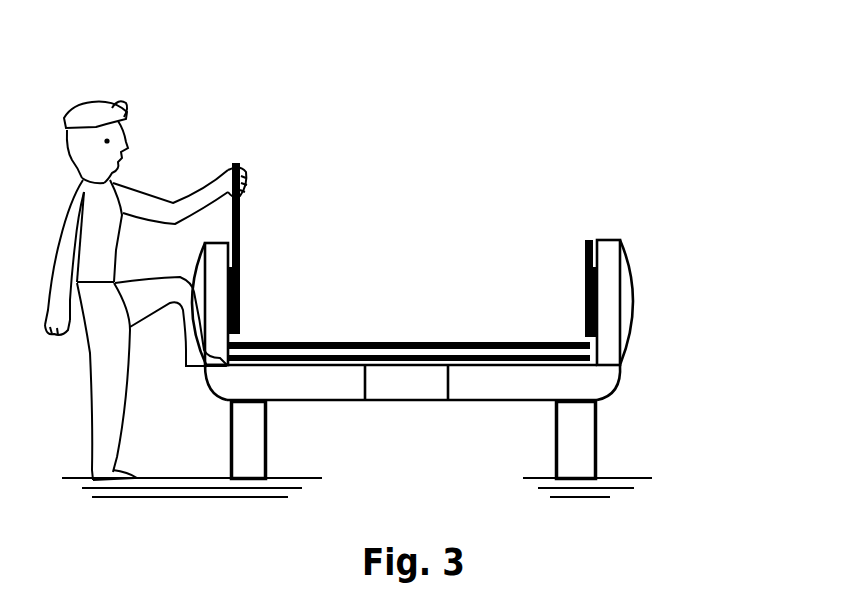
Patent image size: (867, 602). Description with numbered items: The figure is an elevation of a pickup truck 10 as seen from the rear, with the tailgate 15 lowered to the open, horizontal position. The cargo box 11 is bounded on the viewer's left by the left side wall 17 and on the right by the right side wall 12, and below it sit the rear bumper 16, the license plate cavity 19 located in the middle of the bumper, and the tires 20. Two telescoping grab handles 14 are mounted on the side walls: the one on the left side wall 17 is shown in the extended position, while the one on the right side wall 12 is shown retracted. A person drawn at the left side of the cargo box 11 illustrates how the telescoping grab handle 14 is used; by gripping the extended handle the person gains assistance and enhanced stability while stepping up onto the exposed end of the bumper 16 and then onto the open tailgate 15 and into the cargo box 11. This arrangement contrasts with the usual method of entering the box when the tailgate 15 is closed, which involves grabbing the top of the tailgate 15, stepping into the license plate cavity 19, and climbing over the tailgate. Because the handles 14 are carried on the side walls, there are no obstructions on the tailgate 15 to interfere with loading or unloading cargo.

The pickup truck 10 is at (487, 263).
The cargo box 11 is at (451, 287).
The right side wall of cargo box 12 is at (632, 275).
The telescoping grab handle 14 is at (241, 248).
The tailgate 15 is at (398, 343).
The rear bumper 16 is at (300, 400).
The left side wall of cargo box 17 is at (193, 190).
The license plate cavity 19 is at (397, 377).
The tire 20 is at (597, 432).